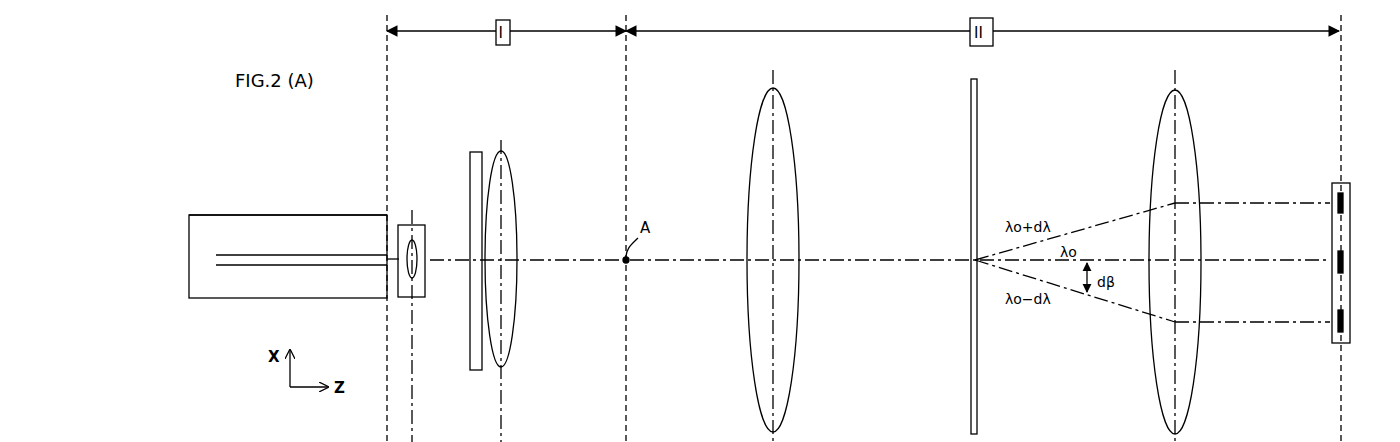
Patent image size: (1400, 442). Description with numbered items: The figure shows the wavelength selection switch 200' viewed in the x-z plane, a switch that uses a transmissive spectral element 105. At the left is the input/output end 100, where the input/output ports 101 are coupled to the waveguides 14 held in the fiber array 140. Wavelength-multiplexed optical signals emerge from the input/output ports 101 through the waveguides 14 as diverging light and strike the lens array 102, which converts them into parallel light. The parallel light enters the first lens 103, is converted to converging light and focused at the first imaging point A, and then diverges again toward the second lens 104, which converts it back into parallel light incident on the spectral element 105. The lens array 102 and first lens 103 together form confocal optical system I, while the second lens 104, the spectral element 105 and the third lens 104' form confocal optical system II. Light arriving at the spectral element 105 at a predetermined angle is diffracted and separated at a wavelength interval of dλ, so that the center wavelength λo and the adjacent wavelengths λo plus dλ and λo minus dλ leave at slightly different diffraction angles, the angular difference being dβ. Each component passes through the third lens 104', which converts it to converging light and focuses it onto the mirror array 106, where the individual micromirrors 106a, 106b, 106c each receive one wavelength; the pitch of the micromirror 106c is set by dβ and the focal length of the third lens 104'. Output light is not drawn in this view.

The waveguide 14 is at (232, 255).
The input/output end 100 is at (390, 300).
The input/output port 101 is at (387, 257).
The lens array 102 is at (420, 222).
The first lens 103 is at (496, 160).
The second lens 104 is at (788, 251).
The third lens 104' is at (1192, 252).
The spectral element 105 is at (968, 82).
The mirror array 106 is at (1334, 184).
The micromirror 106a is at (1366, 188).
The micromirror 106b is at (1342, 255).
The micromirror 106c is at (1342, 312).
The fiber array 140 is at (360, 214).
The wavelength selection switch 200' is at (1364, 228).